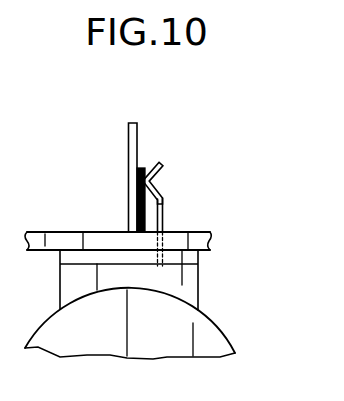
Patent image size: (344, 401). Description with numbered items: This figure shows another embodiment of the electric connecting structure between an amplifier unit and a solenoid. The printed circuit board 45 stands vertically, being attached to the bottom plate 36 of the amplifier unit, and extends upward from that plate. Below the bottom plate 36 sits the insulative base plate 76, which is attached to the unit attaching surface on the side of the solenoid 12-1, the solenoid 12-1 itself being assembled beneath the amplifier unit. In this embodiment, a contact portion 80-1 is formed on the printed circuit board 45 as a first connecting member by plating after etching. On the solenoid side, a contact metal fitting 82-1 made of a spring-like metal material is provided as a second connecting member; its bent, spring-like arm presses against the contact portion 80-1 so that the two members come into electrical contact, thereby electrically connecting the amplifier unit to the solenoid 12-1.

The printed circuit board 45 is at (128, 137).
The contact portion 80-1 is at (163, 165).
The contact metal fitting 82-1 is at (163, 196).
The bottom plate 36 is at (40, 231).
The insulative base plate 76 is at (195, 262).
The solenoid 12-1 is at (209, 336).